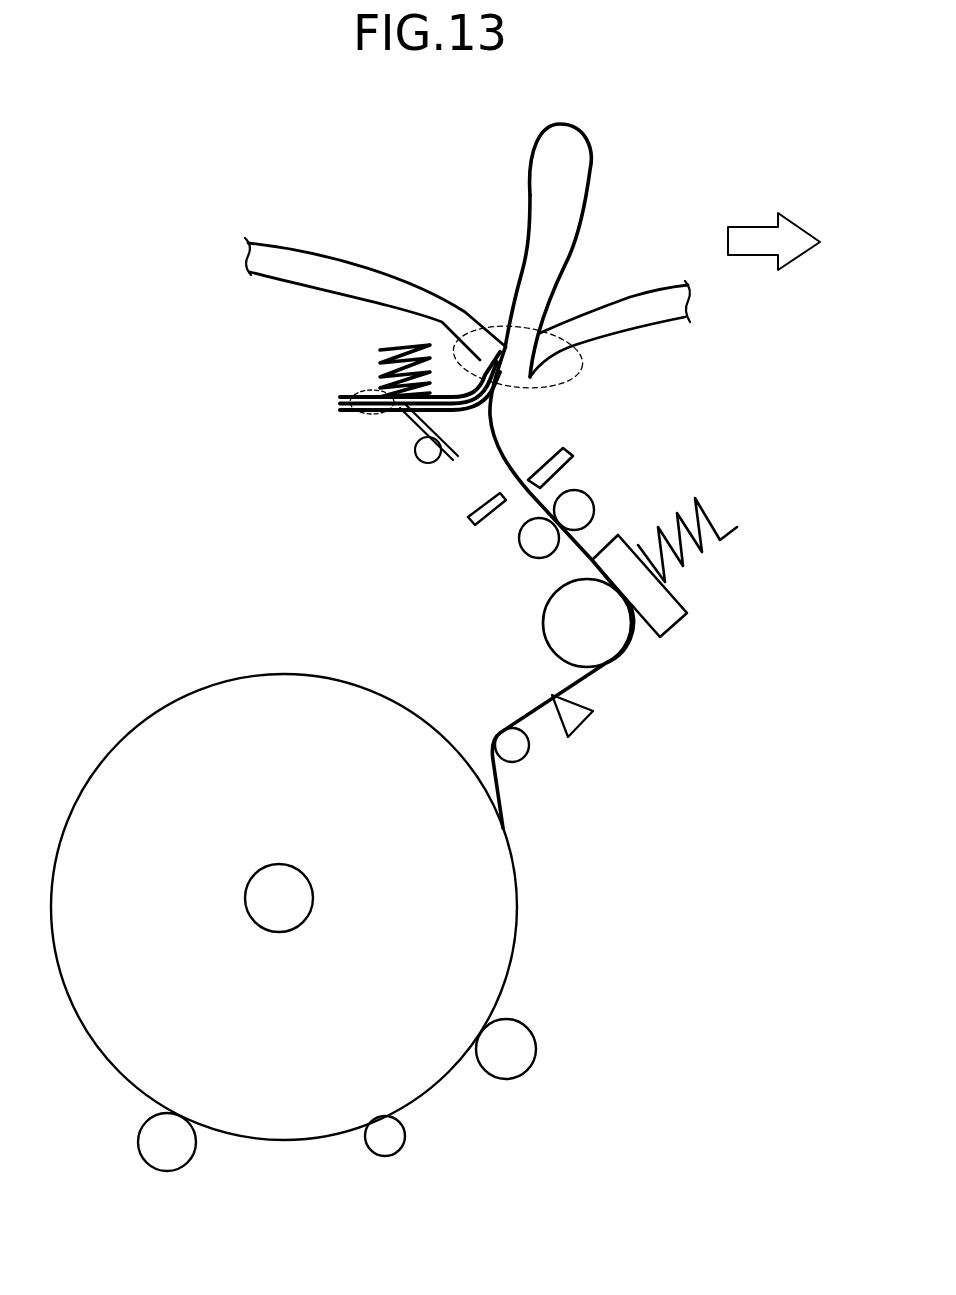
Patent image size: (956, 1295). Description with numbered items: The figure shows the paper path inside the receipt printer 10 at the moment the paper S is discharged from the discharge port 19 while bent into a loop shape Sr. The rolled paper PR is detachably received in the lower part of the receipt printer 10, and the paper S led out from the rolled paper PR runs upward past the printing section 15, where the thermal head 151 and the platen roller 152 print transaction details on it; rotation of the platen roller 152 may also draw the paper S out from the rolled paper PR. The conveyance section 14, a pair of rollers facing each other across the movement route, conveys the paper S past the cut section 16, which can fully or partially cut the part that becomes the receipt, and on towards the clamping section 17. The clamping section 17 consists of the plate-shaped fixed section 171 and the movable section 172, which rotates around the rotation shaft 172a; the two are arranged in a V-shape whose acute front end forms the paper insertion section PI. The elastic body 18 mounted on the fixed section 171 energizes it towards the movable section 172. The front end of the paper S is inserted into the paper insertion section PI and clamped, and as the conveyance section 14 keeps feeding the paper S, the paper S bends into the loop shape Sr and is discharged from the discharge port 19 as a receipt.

The receipt printer 10 is at (105, 232).
The recording sheet Sr is at (524, 189).
The paper S is at (522, 730).
The rolled paper PR is at (265, 706).
The discharge port 19 is at (573, 357).
The clamping section 17 is at (237, 360).
The elastic body 18 is at (378, 350).
The fixed section 171 is at (340, 400).
The paper insertion section PI is at (356, 416).
The movable section 172 is at (398, 420).
The rotation shaft 172a is at (416, 462).
The cut section 16 is at (591, 456).
The conveyance section 14 is at (630, 495).
The printing section 15 is at (787, 730).
The thermal head 151 is at (657, 610).
The platen roller 152 is at (607, 650).